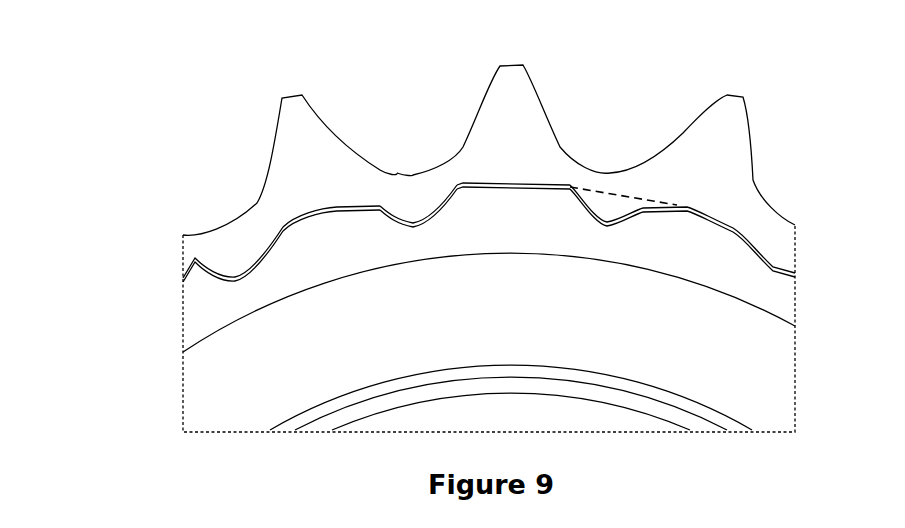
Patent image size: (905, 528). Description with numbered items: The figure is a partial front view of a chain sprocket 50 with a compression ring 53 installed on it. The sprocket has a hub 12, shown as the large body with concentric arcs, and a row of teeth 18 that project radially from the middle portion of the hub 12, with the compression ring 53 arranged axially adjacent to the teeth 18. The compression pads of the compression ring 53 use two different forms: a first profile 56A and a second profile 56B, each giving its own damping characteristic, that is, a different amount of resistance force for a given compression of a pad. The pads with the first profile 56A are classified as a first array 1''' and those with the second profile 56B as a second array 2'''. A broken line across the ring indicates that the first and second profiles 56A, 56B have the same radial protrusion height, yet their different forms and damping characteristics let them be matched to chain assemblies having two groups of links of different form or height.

The hub 12 is at (200, 385).
The teeth 18 is at (312, 112).
The chain sprocket 50 is at (755, 97).
The compression ring 53 is at (425, 210).
The first profile 56A is at (338, 206).
The second profile 56B is at (192, 268).
The first array 1''' is at (249, 207).
The second array 2''' is at (557, 129).